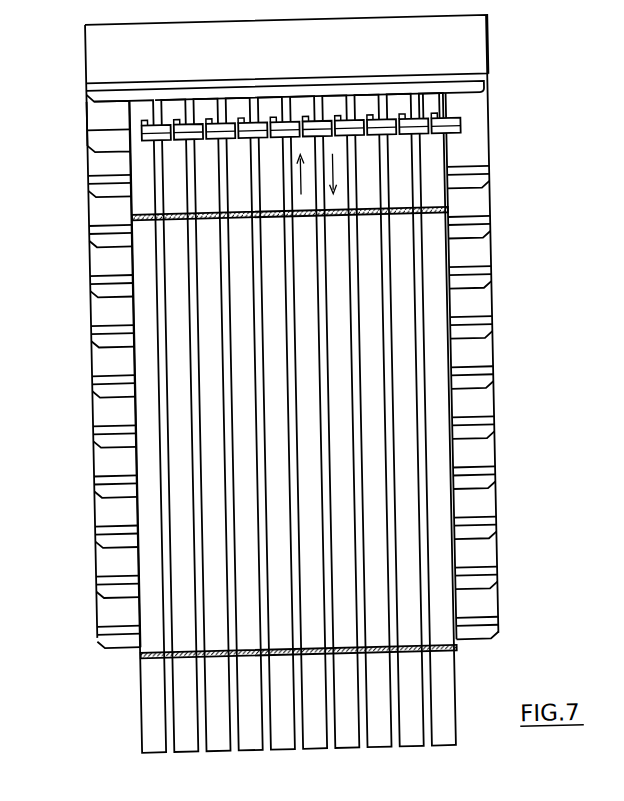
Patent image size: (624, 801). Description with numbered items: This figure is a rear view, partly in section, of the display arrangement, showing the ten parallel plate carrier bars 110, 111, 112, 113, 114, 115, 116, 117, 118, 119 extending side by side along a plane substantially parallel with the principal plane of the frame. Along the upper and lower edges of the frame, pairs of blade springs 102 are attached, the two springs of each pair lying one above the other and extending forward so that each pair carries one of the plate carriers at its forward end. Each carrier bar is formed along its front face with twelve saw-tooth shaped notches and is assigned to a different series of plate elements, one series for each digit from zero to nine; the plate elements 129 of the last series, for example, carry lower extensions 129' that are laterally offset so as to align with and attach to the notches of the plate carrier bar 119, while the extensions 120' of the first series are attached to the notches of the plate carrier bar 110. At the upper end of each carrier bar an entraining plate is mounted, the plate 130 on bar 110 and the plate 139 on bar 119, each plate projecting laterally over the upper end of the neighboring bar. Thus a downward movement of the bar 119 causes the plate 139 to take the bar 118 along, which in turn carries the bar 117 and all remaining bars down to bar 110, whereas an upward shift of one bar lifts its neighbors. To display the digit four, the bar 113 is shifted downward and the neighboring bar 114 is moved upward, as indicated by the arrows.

The plate elements of the last series 129 is at (255, 59).
The extension of plate element 129' is at (80, 124).
The entraining plate 139 is at (137, 141).
The extension of plate element 120' is at (487, 104).
The entraining plate 130 is at (440, 138).
The blade springs 102 is at (507, 666).
The plate carrier bar 110 is at (429, 738).
The plate carrier bar 111 is at (397, 738).
The plate carrier bar 112 is at (364, 738).
The plate carrier bar 113 is at (332, 738).
The plate carrier bar 114 is at (300, 738).
The plate carrier bar 115 is at (268, 738).
The plate carrier bar 116 is at (236, 738).
The plate carrier bar 117 is at (203, 738).
The plate carrier bar 118 is at (171, 738).
The plate carrier bar 119 is at (139, 738).